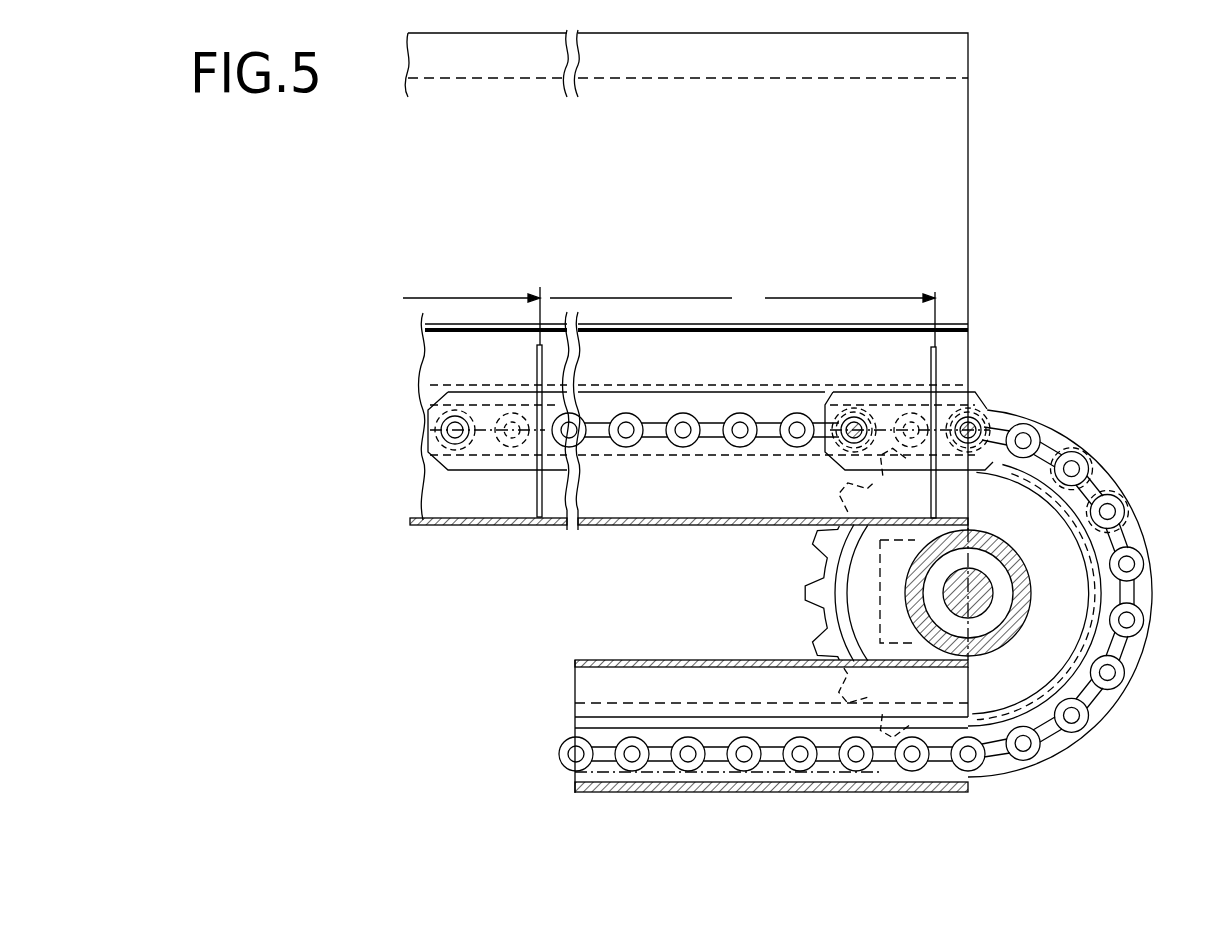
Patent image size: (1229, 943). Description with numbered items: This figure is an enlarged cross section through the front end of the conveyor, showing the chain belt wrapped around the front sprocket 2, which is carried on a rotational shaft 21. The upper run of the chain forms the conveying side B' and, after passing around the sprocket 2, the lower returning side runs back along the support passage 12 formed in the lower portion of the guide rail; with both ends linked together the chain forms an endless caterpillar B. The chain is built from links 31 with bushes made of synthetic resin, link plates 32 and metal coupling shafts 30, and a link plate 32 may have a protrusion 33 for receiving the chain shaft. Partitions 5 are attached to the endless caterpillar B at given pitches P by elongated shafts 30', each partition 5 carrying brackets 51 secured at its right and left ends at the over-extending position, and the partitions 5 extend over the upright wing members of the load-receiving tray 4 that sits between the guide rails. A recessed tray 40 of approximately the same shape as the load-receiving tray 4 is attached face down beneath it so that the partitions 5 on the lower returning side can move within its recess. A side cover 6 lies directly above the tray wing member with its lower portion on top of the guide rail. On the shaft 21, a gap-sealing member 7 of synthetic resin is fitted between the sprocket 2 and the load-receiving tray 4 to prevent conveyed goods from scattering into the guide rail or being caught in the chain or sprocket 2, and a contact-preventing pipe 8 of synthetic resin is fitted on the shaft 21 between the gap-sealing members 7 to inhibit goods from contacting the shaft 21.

The sprocket 2 is at (812, 587).
The load-receiving tray 4 is at (683, 512).
The partition 5 is at (547, 530).
The side cover 6 is at (953, 237).
The gap-sealing member 7 is at (842, 610).
The contact-preventing pipe 8 is at (1027, 572).
The support passage 12 is at (773, 773).
The shaft 21 is at (993, 597).
The coupling shaft 30 is at (802, 438).
The elongated shaft 30' is at (918, 398).
The link 31 is at (1140, 532).
The link plate 32 is at (1097, 487).
The protrusion 33 is at (1108, 492).
The recessed tray 40 is at (657, 673).
The bracket 51 is at (480, 405).
The endless caterpillar B is at (1096, 589).
The conveying side B' is at (695, 395).
The pitch P is at (657, 315).